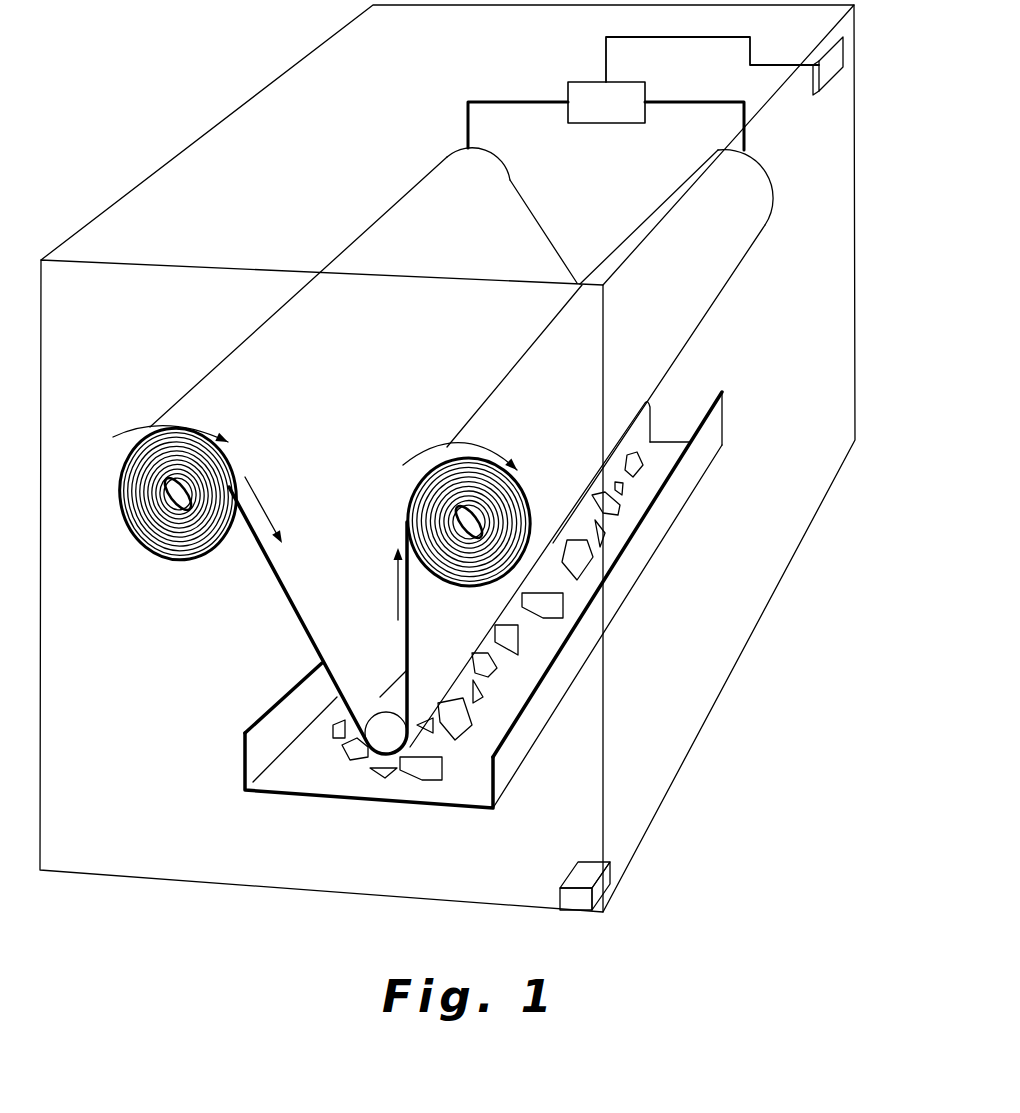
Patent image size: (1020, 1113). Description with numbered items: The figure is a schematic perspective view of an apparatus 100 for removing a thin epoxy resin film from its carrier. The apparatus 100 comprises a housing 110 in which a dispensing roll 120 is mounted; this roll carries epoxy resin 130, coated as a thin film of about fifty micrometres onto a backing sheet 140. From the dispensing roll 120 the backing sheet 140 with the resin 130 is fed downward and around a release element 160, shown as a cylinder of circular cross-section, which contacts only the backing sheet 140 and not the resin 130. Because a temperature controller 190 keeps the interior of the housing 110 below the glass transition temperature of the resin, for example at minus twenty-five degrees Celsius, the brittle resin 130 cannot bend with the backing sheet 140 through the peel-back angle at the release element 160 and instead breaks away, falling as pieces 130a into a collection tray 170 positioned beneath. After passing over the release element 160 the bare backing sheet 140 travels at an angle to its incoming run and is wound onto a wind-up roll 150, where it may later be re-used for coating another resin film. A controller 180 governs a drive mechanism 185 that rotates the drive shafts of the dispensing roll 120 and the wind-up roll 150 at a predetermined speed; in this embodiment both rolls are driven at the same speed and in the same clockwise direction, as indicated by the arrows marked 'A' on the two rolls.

The apparatus 100 is at (764, 649).
The housing 110 is at (122, 741).
The dispensing roll 120 is at (147, 560).
The epoxy resin 130 is at (289, 615).
The pieces 130a is at (620, 512).
The backing sheet 140 is at (351, 423).
The wind-up roll 150 is at (704, 328).
The release element 160 is at (385, 735).
The collection tray 170 is at (520, 743).
The controller 180 is at (831, 68).
The drive mechanism 185 is at (590, 116).
The temperature controller 190 is at (572, 871).